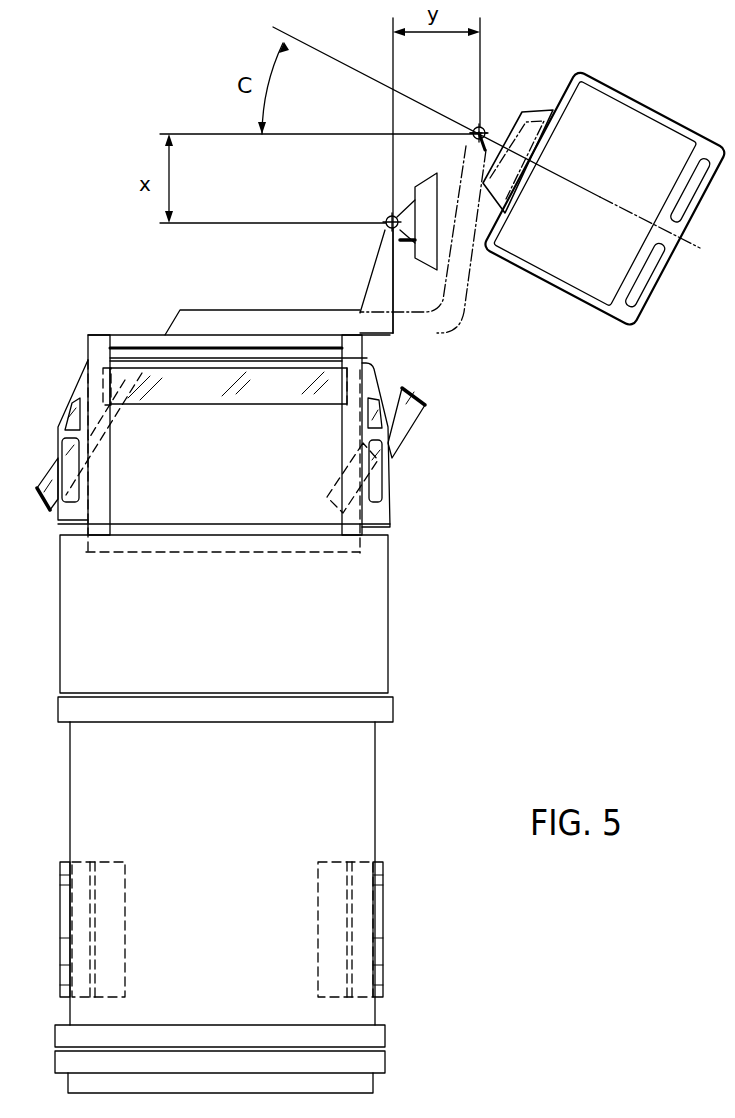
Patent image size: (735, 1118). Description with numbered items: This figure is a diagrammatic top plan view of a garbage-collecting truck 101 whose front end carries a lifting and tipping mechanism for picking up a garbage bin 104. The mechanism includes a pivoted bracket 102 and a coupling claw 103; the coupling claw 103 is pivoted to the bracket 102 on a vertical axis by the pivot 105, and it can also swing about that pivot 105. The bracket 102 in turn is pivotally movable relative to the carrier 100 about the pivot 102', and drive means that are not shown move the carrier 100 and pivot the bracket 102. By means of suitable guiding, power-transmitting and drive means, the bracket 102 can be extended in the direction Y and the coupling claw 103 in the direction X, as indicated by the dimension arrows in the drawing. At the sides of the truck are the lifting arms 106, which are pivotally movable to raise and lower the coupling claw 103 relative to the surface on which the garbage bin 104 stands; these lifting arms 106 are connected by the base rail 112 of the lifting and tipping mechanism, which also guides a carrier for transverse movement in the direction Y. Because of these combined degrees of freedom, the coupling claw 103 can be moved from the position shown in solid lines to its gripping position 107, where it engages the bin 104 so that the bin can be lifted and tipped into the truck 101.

The carrier 100 is at (263, 324).
The garbage-collecting truck 101 is at (375, 620).
The pivoted bracket 102 is at (355, 280).
The pivot 102' is at (425, 250).
The coupling claw 103 is at (427, 193).
The garbage bin 104 is at (633, 127).
The pivot 105 is at (384, 222).
The lifting arms 106 is at (88, 351).
The gripping position 107 is at (502, 119).
The base rail 112 is at (140, 333).